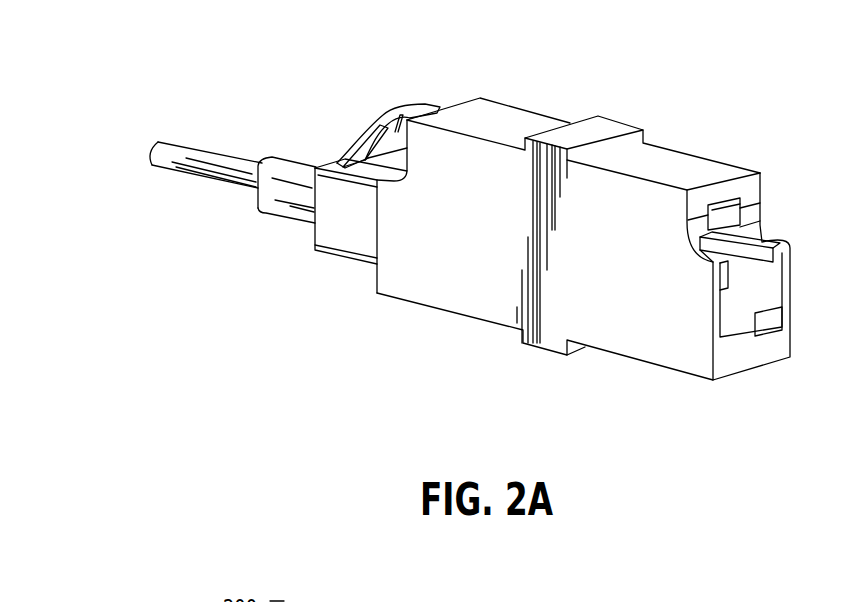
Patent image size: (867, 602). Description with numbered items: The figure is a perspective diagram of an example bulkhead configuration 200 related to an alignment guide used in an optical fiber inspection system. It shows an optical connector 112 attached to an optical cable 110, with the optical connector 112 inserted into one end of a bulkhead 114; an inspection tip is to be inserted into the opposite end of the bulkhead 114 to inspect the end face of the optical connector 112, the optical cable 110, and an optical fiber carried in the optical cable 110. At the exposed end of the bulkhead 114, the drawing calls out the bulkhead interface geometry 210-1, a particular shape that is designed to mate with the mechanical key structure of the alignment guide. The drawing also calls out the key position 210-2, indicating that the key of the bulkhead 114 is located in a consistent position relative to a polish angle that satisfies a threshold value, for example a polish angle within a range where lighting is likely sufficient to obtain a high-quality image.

The bulkhead configuration 200 is at (124, 42).
The optical cable 110 is at (276, 212).
The optical connector 112 is at (337, 258).
The bulkhead 114 is at (521, 102).
The bulkhead interface geometry 210-1 is at (706, 312).
The key position 210-2 is at (718, 187).